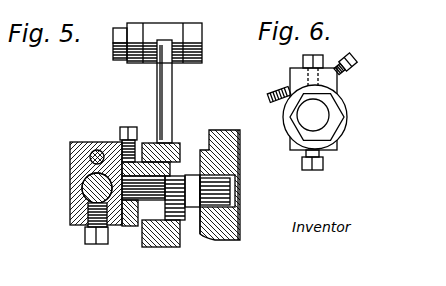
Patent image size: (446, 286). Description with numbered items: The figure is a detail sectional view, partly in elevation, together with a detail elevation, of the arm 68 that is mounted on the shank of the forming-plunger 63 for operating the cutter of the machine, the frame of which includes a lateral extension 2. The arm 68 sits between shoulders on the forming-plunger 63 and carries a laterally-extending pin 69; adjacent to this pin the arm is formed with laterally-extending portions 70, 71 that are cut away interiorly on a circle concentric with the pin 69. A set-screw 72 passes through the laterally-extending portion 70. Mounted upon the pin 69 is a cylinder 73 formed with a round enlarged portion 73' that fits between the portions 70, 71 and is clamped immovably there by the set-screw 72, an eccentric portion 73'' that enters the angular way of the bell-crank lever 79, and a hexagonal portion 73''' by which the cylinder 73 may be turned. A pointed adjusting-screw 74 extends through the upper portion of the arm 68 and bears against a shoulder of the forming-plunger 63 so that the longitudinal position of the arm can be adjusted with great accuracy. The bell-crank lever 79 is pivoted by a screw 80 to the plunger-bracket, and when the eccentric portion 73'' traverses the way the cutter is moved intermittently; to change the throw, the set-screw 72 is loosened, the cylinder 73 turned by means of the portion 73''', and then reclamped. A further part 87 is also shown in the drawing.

In FIG. 5, the lateral extension 2 is at (241, 136).
In FIG. 5, the forming-plunger 63 is at (83, 191).
In FIG. 5, the arm 68 is at (70, 168).
In FIG. 5, the pin 69 is at (229, 192).
In FIG. 6, the pin 69 is at (318, 121).
In FIG. 5, the laterally-extending portion 70 is at (146, 160).
In FIG. 6, the laterally-extending portion 70 is at (330, 83).
In FIG. 5, the laterally-extending portion 71 is at (137, 230).
In FIG. 6, the laterally-extending portion 71 is at (300, 152).
In FIG. 5, the set-screw 72 is at (122, 130).
In FIG. 6, the set-screw 72 is at (303, 61).
In FIG. 5, the cylinder 73 is at (163, 228).
In FIG. 6, the cylinder 73 is at (274, 101).
In FIG. 5, the round enlarged portion 73' is at (115, 240).
In FIG. 5, the eccentric portion 73'' is at (177, 141).
In FIG. 6, the eccentric portion 73'' is at (329, 117).
In FIG. 5, the hexagonal portion 73''' is at (221, 232).
In FIG. 6, the hexagonal portion 73''' is at (334, 120).
In FIG. 5, the pointed adjusting-screw 74 is at (91, 150).
In FIG. 6, the pointed adjusting-screw 74 is at (360, 52).
In FIG. 5, the bell-crank lever 79 is at (175, 100).
In FIG. 5, the screw 80 is at (183, 26).
In FIG. 5, the lower block 87 is at (163, 247).